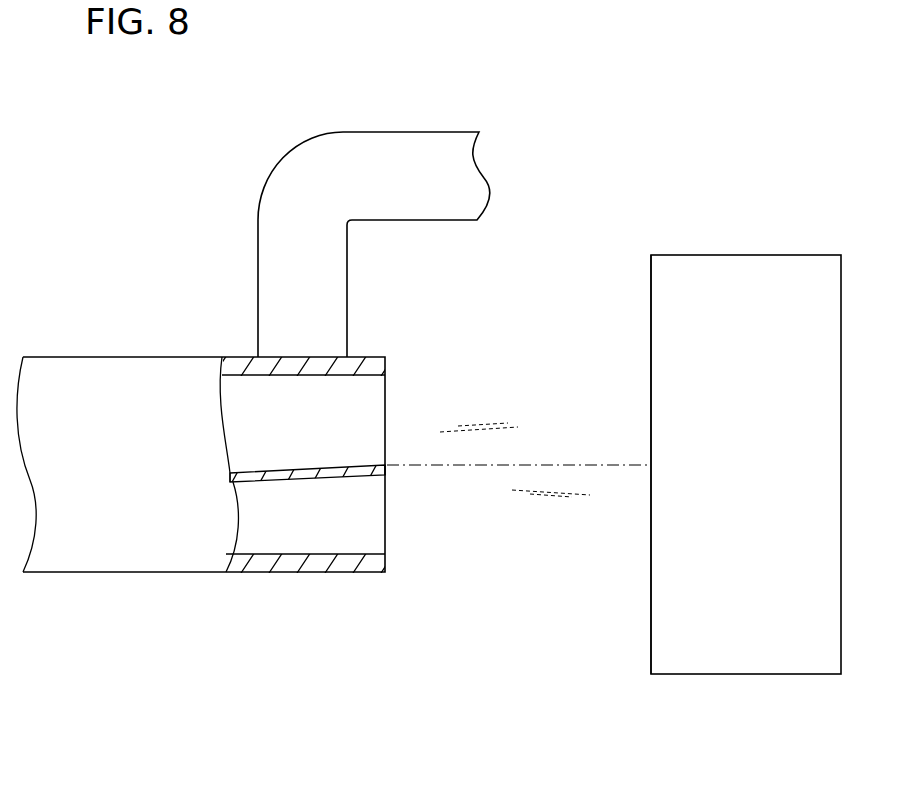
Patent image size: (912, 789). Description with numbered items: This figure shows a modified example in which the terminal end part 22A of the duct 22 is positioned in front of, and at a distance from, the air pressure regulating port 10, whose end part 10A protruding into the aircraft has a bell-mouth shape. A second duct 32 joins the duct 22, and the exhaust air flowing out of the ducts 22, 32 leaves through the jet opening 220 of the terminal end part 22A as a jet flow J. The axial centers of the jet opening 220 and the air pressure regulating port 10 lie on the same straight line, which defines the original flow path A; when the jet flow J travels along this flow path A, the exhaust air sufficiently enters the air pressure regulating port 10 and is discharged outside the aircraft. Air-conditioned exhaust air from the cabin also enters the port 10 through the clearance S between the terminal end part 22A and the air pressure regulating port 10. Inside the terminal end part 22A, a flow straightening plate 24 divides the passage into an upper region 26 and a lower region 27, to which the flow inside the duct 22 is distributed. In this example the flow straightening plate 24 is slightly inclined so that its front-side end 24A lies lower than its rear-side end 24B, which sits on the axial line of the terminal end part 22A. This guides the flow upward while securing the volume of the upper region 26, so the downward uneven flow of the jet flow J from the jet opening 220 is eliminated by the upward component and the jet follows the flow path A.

The air pressure regulating port 10 is at (767, 255).
The end part of the air pressure regulating port 10A is at (653, 255).
The duct 22 is at (80, 357).
The terminal end part 22A is at (365, 357).
The jet opening 220 is at (380, 553).
The flow straightening plate 24 is at (353, 465).
The front-side end 24A is at (232, 478).
The rear-side end 24B is at (387, 468).
The upper region 26 is at (310, 434).
The lower region 27 is at (310, 536).
The duct 32 is at (272, 172).
The jet flow J is at (513, 418).
The flow path A is at (518, 451).
The clearance S is at (620, 562).